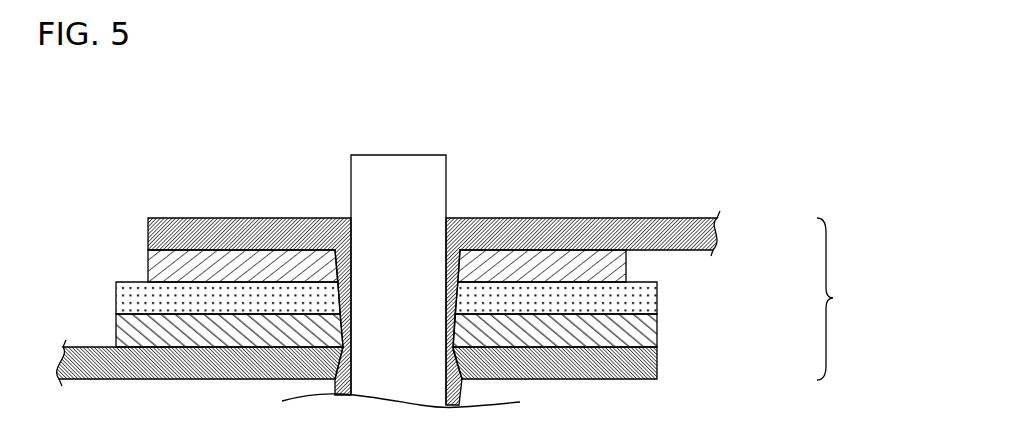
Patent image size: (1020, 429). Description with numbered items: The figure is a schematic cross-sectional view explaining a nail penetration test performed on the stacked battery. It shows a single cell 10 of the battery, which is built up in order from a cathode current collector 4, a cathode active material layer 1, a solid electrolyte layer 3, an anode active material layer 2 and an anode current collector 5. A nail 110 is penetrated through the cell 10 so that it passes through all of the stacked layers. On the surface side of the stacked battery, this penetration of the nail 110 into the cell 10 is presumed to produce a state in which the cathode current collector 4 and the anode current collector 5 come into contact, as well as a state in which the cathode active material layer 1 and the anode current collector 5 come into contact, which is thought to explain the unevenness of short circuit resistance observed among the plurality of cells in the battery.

The nail 110 is at (405, 173).
The cathode current collector 4 is at (710, 233).
The cathode active material layer 1 is at (627, 263).
The solid electrolyte layer 3 is at (642, 298).
The anode active material layer 2 is at (643, 328).
The anode current collector 5 is at (642, 360).
The cell 10 is at (852, 299).